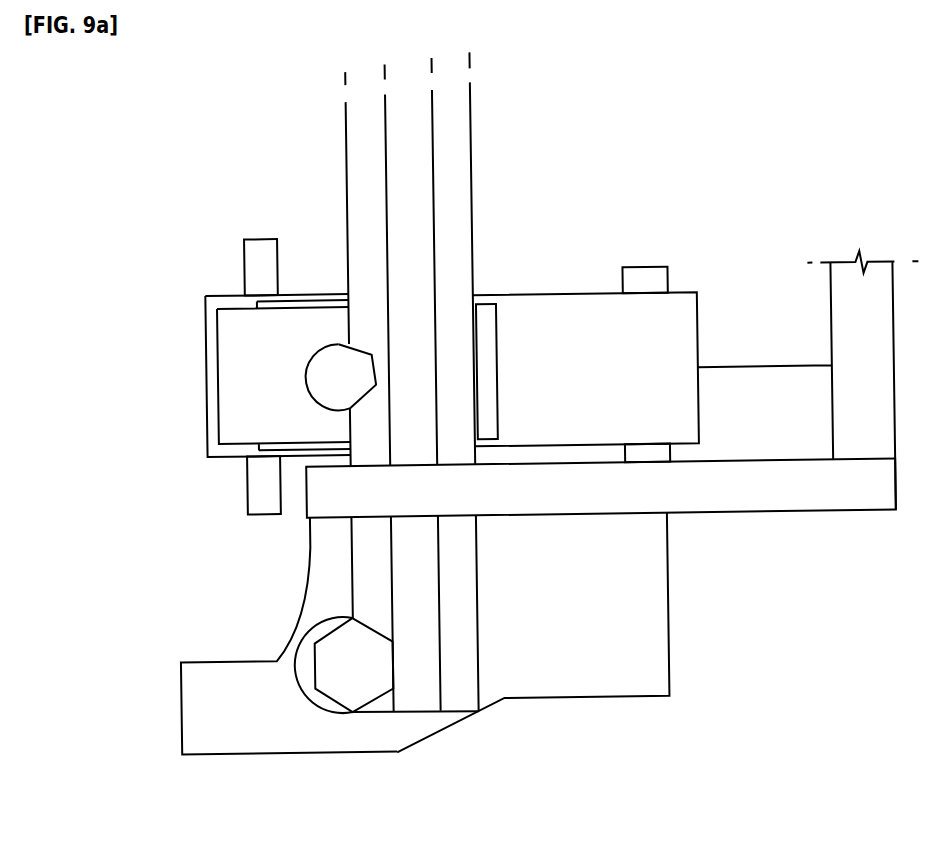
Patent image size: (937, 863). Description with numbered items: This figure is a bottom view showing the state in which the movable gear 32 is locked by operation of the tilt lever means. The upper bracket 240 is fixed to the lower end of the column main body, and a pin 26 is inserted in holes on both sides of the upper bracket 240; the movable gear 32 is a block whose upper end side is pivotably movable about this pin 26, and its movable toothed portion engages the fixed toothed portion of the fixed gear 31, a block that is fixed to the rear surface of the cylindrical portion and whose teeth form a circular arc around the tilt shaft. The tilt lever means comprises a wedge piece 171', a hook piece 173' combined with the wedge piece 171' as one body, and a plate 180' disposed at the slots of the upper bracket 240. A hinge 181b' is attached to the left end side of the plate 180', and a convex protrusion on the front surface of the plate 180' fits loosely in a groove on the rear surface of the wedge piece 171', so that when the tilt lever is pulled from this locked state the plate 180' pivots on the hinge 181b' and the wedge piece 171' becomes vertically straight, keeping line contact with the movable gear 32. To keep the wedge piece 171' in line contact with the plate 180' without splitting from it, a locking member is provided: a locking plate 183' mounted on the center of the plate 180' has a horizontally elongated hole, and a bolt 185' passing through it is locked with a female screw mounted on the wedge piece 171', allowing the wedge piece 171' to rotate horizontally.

The plate 180' is at (480, 381).
The fixed gear 31 is at (208, 291).
The hook piece 173' is at (219, 376).
The bolt 185' is at (320, 288).
The locking plate 183' is at (229, 417).
The wedge piece 171' is at (539, 323).
The pin 26 is at (648, 274).
The movable gear 32 is at (674, 320).
The upper bracket 240 is at (763, 494).
The hinge 181b' is at (344, 729).